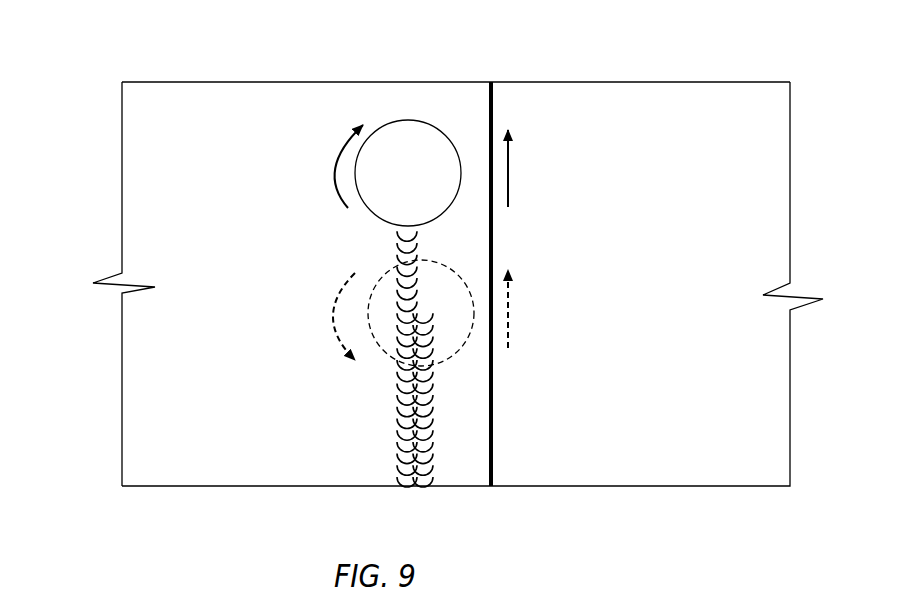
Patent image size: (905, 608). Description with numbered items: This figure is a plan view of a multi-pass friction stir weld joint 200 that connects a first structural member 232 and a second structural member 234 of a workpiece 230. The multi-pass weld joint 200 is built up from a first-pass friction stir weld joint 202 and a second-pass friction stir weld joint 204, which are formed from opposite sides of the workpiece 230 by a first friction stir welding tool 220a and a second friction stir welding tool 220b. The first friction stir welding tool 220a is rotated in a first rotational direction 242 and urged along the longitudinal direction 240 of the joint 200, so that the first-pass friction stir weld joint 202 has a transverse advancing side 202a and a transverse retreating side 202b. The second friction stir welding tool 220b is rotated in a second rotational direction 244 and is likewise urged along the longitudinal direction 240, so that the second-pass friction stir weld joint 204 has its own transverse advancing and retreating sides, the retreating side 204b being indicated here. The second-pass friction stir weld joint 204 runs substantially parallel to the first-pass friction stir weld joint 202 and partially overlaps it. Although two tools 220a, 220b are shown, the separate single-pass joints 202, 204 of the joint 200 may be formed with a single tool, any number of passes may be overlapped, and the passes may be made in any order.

The multi-pass friction stir weld joint 200 is at (421, 511).
The first-pass friction stir weld joint 202 is at (406, 486).
The advancing side of first-pass friction stir weld joint 202a is at (393, 240).
The retreating side of first-pass friction stir weld joint 202b is at (427, 240).
The second-pass friction stir weld joint 204 is at (428, 487).
The retreating side of second-pass friction stir weld joint 204b is at (412, 449).
The first friction stir welding tool 220a is at (397, 120).
The second friction stir welding tool 220b is at (460, 345).
The workpiece 230 is at (820, 145).
The first structural member 232 is at (662, 82).
The second structural member 234 is at (122, 144).
The longitudinal direction 240 is at (512, 160).
The first rotational direction 242 is at (333, 162).
The second rotational direction 244 is at (333, 321).